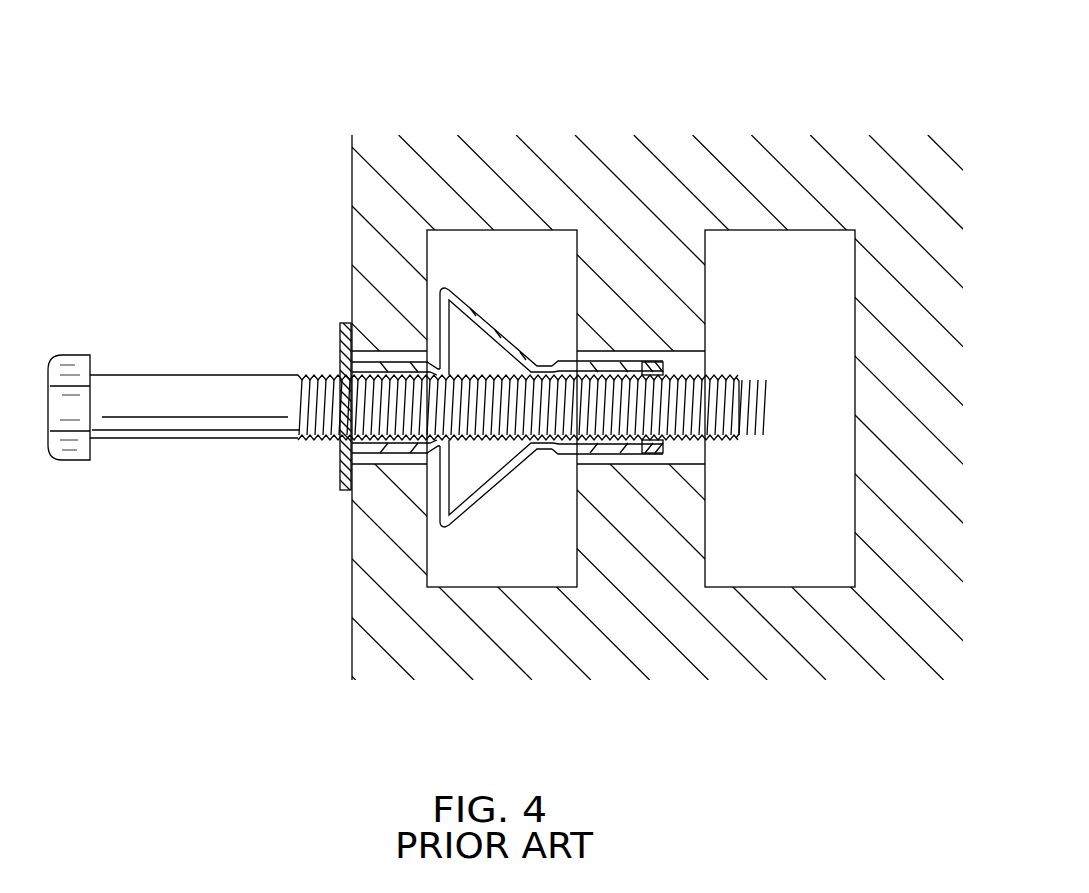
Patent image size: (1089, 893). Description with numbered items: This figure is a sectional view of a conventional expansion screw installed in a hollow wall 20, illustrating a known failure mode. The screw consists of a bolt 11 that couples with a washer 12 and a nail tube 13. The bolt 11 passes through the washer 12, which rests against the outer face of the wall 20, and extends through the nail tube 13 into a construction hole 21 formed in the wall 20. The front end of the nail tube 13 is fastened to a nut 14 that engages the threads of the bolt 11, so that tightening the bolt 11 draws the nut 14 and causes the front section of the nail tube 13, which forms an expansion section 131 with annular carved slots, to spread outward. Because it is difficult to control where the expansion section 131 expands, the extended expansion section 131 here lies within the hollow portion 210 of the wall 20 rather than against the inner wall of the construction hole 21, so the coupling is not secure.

The bolt 11 is at (315, 417).
The washer 12 is at (340, 333).
The nail tube 13 is at (459, 329).
The expansion section 131 is at (493, 330).
The nut 14 is at (660, 447).
The hollow wall 20 is at (398, 635).
The construction hole 21 is at (693, 368).
The hollow portion 210 is at (803, 275).